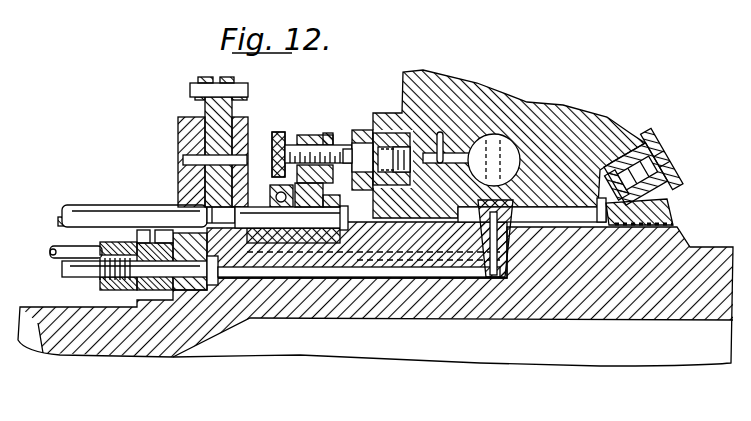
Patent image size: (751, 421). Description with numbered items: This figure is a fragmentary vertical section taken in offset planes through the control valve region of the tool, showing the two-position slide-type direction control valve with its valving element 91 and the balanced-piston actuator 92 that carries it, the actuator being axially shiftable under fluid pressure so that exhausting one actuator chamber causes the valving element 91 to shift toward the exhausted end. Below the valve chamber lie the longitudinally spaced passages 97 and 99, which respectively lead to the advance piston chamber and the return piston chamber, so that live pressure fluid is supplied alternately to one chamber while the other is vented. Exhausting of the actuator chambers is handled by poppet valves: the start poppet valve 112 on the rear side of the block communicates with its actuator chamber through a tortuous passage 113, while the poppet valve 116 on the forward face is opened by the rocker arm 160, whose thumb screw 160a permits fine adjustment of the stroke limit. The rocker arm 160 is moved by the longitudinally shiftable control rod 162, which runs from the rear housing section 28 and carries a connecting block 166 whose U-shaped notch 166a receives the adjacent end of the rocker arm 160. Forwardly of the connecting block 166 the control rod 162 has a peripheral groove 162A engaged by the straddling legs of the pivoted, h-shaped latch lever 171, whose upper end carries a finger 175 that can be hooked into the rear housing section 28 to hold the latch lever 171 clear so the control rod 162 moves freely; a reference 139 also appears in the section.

The rear housing section 28 is at (705, 256).
The valving element 91 is at (508, 208).
The actuator 92 is at (515, 152).
The passage 97 is at (50, 255).
The passage 99 is at (78, 278).
The poppet valve 112 is at (670, 170).
The tortuous passage 113 is at (558, 221).
The poppet valve 116 is at (355, 136).
The reference 139 is at (18, 406).
The rocker arm 160 is at (306, 143).
The thumb screw 160a is at (281, 130).
The control rod 162 is at (107, 196).
The peripheral groove 162A is at (172, 212).
The connecting block 166 is at (290, 214).
The U-shaped notch 166a is at (300, 223).
The latch lever 171 is at (205, 110).
The finger 175 is at (201, 84).